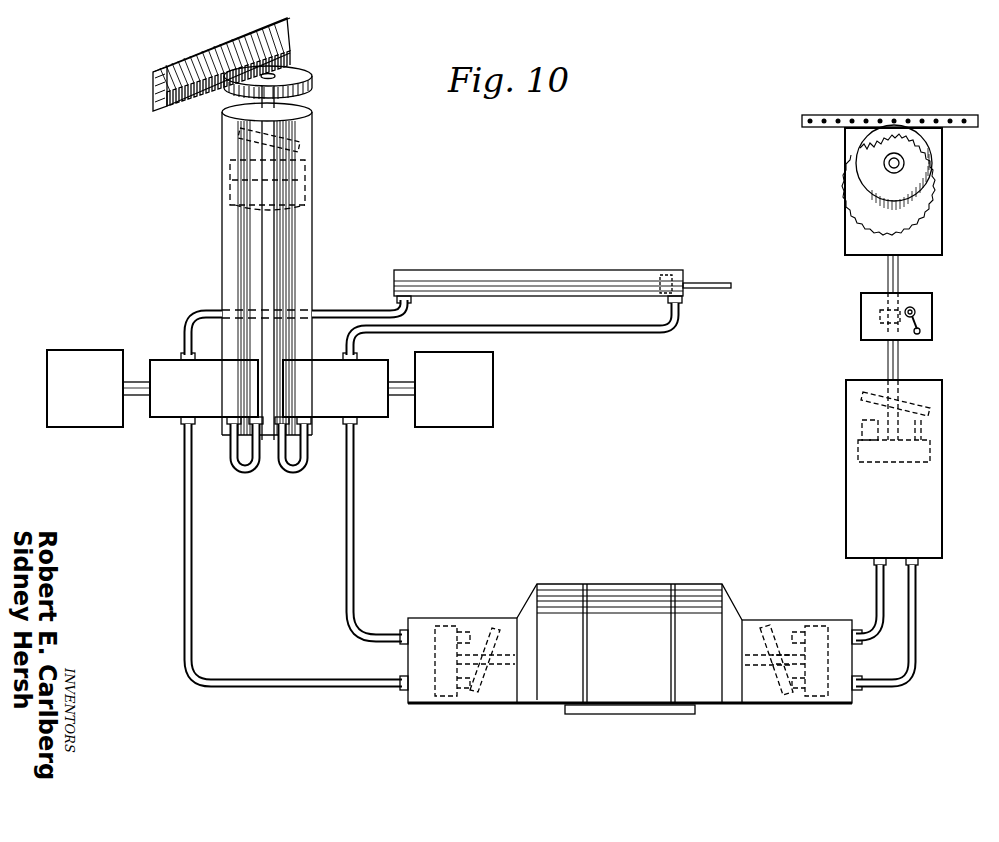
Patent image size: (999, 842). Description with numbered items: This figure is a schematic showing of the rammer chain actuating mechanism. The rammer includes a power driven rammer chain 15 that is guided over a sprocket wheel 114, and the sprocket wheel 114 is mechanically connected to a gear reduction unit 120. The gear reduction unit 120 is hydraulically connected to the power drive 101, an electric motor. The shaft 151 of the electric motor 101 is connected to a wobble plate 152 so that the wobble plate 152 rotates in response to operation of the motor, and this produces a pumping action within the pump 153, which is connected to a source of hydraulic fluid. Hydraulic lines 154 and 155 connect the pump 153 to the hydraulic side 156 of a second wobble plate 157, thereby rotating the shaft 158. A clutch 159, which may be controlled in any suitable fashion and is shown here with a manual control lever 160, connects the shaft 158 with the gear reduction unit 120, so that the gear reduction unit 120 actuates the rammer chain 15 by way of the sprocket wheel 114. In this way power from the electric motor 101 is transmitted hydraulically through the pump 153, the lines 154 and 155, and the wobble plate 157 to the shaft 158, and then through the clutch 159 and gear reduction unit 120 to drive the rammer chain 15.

The rammer chain 15 is at (901, 112).
The sprocket wheel 114 is at (925, 167).
The gear reduction unit 120 is at (942, 235).
The clutch 159 is at (932, 297).
The manual control lever 160 is at (921, 325).
The shaft 158 is at (899, 358).
The wobble plate 157 is at (935, 412).
The hydraulic side 156 is at (917, 472).
The hydraulic line 154 is at (874, 580).
The hydraulic line 155 is at (918, 580).
The power drive 101 is at (631, 650).
The shaft 151 is at (766, 666).
The wobble plate 152 is at (782, 694).
The pump 153 is at (822, 695).